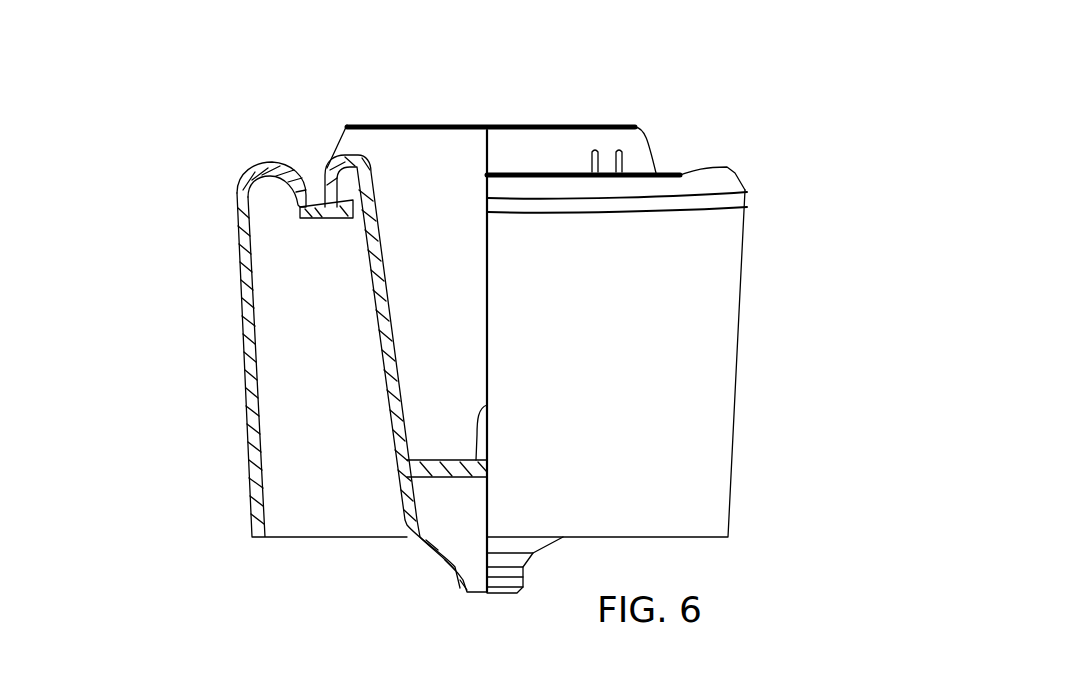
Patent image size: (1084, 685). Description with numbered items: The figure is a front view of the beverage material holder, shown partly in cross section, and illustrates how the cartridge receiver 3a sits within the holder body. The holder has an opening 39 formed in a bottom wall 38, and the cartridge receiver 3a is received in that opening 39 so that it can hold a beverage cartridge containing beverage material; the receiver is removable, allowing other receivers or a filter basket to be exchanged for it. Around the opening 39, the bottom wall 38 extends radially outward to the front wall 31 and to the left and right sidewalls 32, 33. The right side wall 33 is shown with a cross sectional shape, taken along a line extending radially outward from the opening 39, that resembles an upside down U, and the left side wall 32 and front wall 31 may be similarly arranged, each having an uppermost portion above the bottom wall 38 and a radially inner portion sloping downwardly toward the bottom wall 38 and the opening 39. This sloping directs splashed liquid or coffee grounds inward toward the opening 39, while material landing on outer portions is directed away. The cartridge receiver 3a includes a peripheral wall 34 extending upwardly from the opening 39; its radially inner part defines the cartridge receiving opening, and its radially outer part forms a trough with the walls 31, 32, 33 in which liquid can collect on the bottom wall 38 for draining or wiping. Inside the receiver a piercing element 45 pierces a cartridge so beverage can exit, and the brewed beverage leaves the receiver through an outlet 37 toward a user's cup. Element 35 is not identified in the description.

The cartridge receiver 3a is at (447, 103).
The peripheral wall 34 is at (557, 135).
The left sidewall 32 is at (733, 172).
The front wall 31 is at (527, 193).
The side wall 35 is at (700, 450).
The outlet 37 is at (460, 593).
The right side wall 33 is at (253, 173).
The bottom wall 38 is at (332, 212).
The opening 39 is at (353, 207).
The piercing element 45 is at (480, 437).